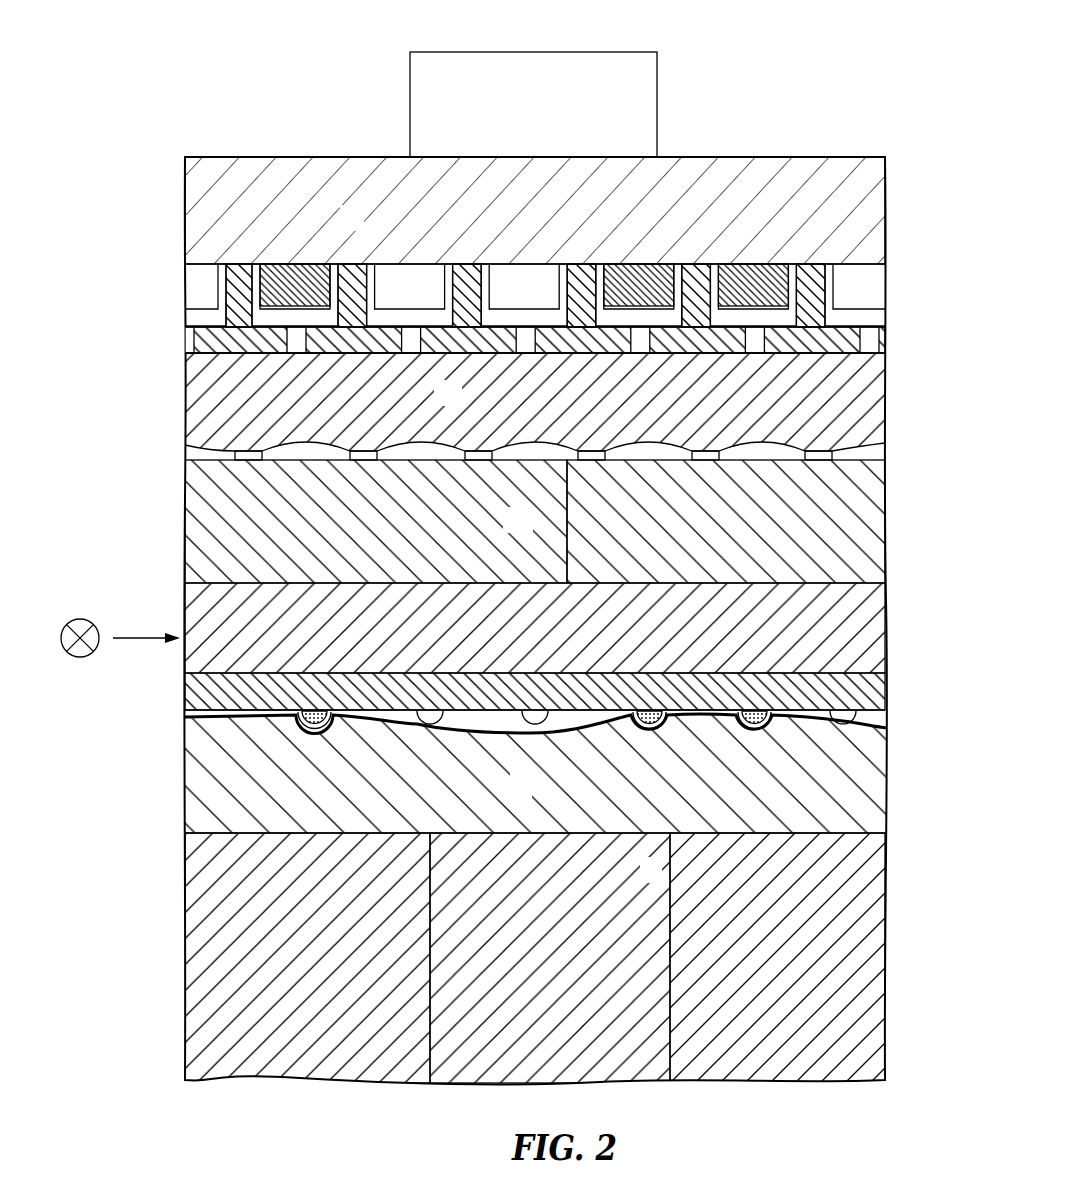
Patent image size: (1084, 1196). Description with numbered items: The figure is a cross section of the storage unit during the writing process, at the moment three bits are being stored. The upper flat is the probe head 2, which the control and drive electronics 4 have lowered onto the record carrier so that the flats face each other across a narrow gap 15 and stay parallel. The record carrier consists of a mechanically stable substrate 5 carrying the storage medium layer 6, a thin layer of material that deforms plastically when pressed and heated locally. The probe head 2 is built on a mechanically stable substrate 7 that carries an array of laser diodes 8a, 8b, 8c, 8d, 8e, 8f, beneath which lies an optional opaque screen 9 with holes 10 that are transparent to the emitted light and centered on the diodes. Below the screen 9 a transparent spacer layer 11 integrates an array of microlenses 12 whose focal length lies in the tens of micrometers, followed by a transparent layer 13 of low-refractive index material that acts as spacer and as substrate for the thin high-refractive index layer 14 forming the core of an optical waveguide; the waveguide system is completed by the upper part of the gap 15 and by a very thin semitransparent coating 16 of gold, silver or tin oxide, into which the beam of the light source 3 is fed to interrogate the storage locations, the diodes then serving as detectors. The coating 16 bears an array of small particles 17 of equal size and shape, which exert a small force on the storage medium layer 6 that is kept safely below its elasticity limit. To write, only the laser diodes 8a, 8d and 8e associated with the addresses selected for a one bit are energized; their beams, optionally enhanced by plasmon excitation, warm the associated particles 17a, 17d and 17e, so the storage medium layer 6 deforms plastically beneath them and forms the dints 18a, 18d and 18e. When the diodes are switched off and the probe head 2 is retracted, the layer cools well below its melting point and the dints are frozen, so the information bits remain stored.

The probe head 2 is at (166, 495).
The light source 3 is at (80, 619).
The control and drive electronics 4 is at (595, 60).
The substrate 5 is at (658, 882).
The storage medium layer 6 is at (528, 797).
The substrate 7 is at (359, 229).
The laser diode 8a is at (284, 273).
The laser diode 8b is at (398, 299).
The laser diode 8c is at (536, 299).
The laser diode 8d is at (650, 275).
The laser diode 8e is at (760, 275).
The laser diode 8f is at (844, 299).
The opaque screen 9 is at (827, 345).
The holes 10 is at (638, 343).
The transparent spacer layer 11 is at (461, 404).
The microlenses 12 is at (526, 453).
The transparent layer of low-refractive index material 13 is at (530, 531).
The high-refractive index layer 14 is at (188, 603).
The gap 15 is at (166, 714).
The semitransparent coating 16 is at (182, 683).
The particles 17 is at (564, 767).
The particle 17a is at (313, 732).
The particle 17d is at (652, 732).
The particle 17e is at (753, 732).
The dint 18a is at (331, 734).
The dint 18d is at (666, 734).
The dint 18e is at (771, 734).